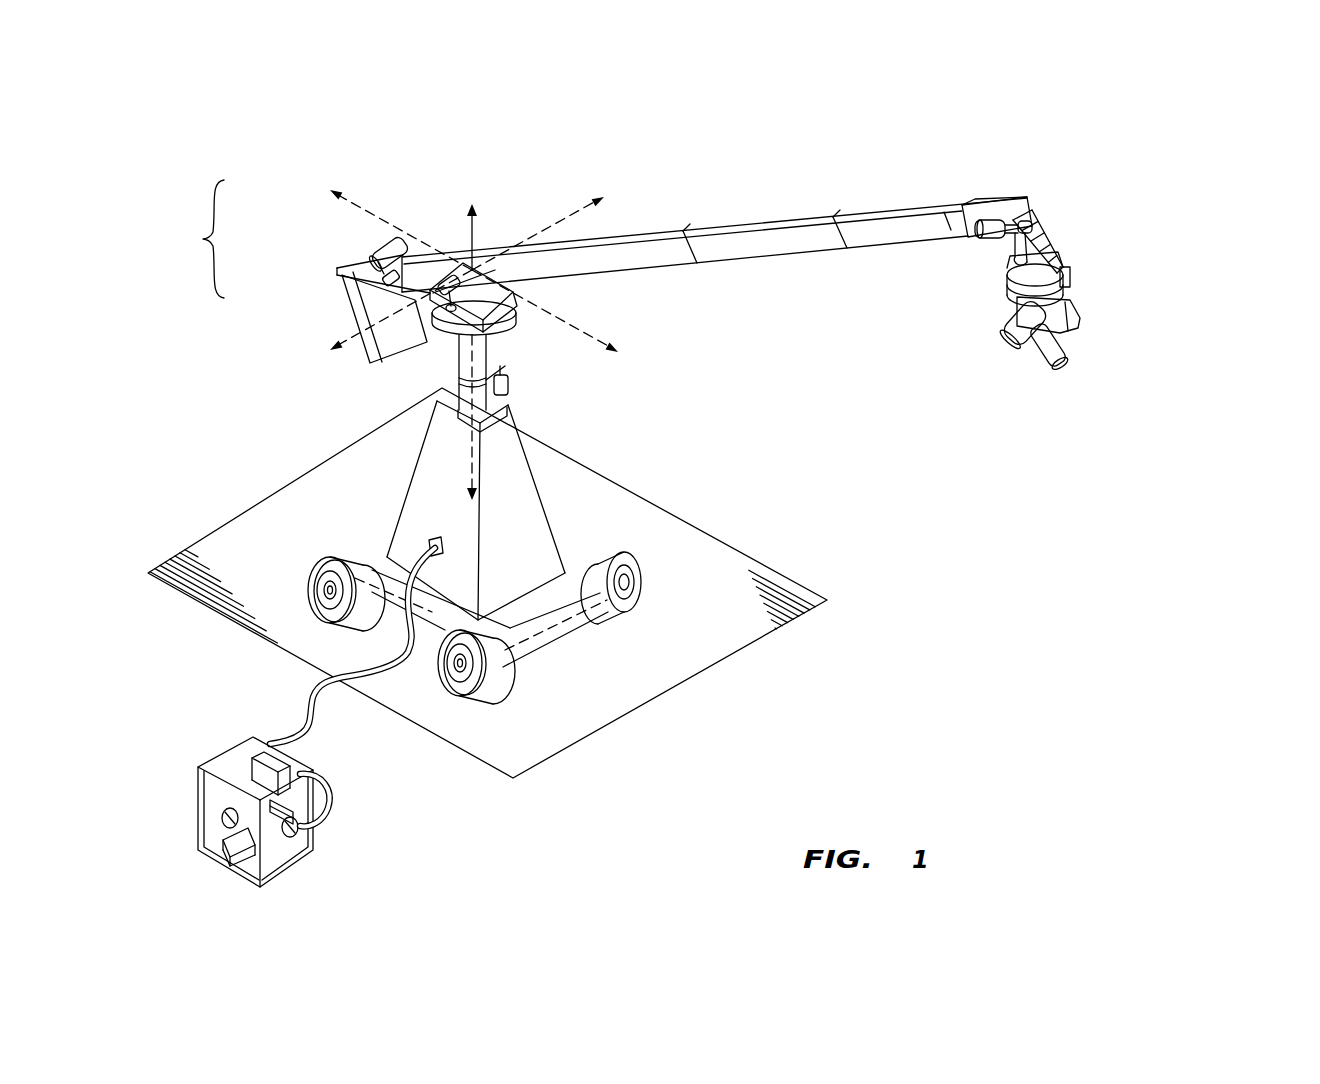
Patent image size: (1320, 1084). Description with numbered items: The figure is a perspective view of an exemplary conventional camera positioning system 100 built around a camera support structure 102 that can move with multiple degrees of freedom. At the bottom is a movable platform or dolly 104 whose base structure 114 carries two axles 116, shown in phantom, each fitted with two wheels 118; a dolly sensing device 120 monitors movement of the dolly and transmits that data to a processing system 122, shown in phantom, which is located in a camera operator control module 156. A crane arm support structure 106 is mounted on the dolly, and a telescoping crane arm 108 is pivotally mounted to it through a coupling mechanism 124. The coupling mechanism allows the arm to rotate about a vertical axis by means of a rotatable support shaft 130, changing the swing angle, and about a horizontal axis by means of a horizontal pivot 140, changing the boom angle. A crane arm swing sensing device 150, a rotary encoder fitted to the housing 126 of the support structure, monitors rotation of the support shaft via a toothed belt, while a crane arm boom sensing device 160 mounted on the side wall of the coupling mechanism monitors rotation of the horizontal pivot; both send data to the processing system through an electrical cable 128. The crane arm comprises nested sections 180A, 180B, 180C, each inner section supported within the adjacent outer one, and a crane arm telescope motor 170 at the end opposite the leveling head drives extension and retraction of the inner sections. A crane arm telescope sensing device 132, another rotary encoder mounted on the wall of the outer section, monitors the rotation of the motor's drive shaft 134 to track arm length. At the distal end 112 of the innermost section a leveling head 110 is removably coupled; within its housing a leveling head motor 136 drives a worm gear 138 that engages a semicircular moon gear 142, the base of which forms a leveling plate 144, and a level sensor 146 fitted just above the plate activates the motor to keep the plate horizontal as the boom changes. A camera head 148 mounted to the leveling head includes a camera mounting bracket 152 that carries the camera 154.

The camera positioning system 100 is at (1184, 437).
The camera support structure 102 is at (191, 239).
The dolly 104 is at (368, 522).
The crane arm support structure 106 is at (540, 460).
The telescoping crane arm 108 is at (714, 217).
The leveling head 110 is at (1059, 264).
The distal end 112 is at (947, 210).
The base structure 114 is at (496, 627).
The axle 116 is at (362, 614).
The wheel 118 is at (496, 623).
The dolly sensing device 120 is at (447, 667).
The processing system 122 is at (222, 851).
The coupling mechanism 124 is at (530, 340).
The housing 126 is at (458, 512).
The electrical cable 128 is at (318, 694).
The rotatable support shaft 130 is at (463, 408).
The crane arm telescope sensing device 132 is at (344, 327).
The drive shaft 134 is at (337, 282).
The leveling head motor 136 is at (990, 226).
The worm gear 138 is at (1027, 222).
The horizontal pivot 140 is at (450, 300).
The semicircular moon gear 142 is at (1037, 228).
The leveling plate 144 is at (1010, 256).
The level sensor 146 is at (1007, 290).
The camera head 148 is at (1095, 304).
The crane arm swing sensing device 150 is at (512, 385).
The camera mounting bracket 152 is at (1005, 336).
The camera 154 is at (1035, 337).
The camera operator control module 156 is at (342, 768).
The crane arm boom sensing device 160 is at (467, 320).
The crane arm telescope motor 170 is at (372, 250).
The crane arm section 180A is at (584, 276).
The crane arm section 180B is at (793, 256).
The crane arm section 180C is at (896, 246).